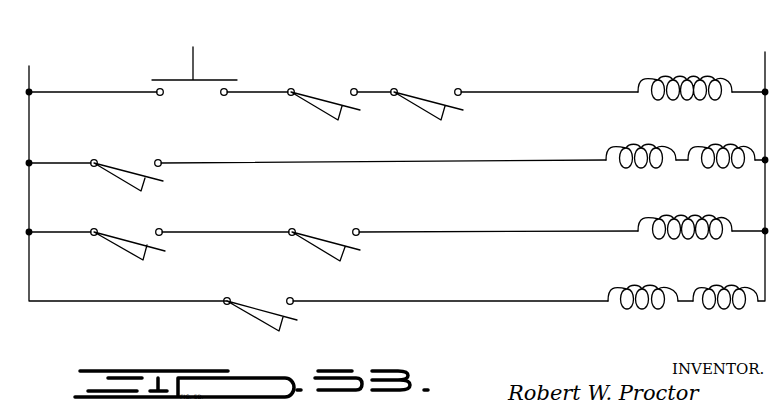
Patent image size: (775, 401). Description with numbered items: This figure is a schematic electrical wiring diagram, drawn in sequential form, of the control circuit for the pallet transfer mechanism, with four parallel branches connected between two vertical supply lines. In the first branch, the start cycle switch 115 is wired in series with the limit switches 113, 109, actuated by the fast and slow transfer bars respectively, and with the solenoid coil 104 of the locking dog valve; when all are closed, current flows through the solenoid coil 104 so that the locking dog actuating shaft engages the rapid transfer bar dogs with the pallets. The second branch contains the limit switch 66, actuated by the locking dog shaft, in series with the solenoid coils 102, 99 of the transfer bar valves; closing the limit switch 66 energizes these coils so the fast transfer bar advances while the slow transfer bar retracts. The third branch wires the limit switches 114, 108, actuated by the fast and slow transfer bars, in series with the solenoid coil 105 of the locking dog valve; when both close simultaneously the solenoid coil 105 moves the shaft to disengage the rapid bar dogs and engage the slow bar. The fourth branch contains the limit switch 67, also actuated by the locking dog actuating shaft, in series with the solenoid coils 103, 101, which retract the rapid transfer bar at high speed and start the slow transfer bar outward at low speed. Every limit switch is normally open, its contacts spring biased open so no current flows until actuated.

The start cycle switch 115 is at (153, 88).
The limit switch 113 is at (325, 108).
The limit switch 109 is at (428, 113).
The solenoid coil 104 is at (670, 101).
The limit switch 66 is at (120, 170).
The solenoid coil 102 is at (636, 172).
The solenoid coil 99 is at (733, 176).
The limit switch 114 is at (120, 250).
The limit switch 108 is at (332, 260).
The solenoid coil 105 is at (683, 243).
The limit switch 67 is at (257, 305).
The solenoid coil 103 is at (642, 310).
The solenoid coil 101 is at (735, 310).